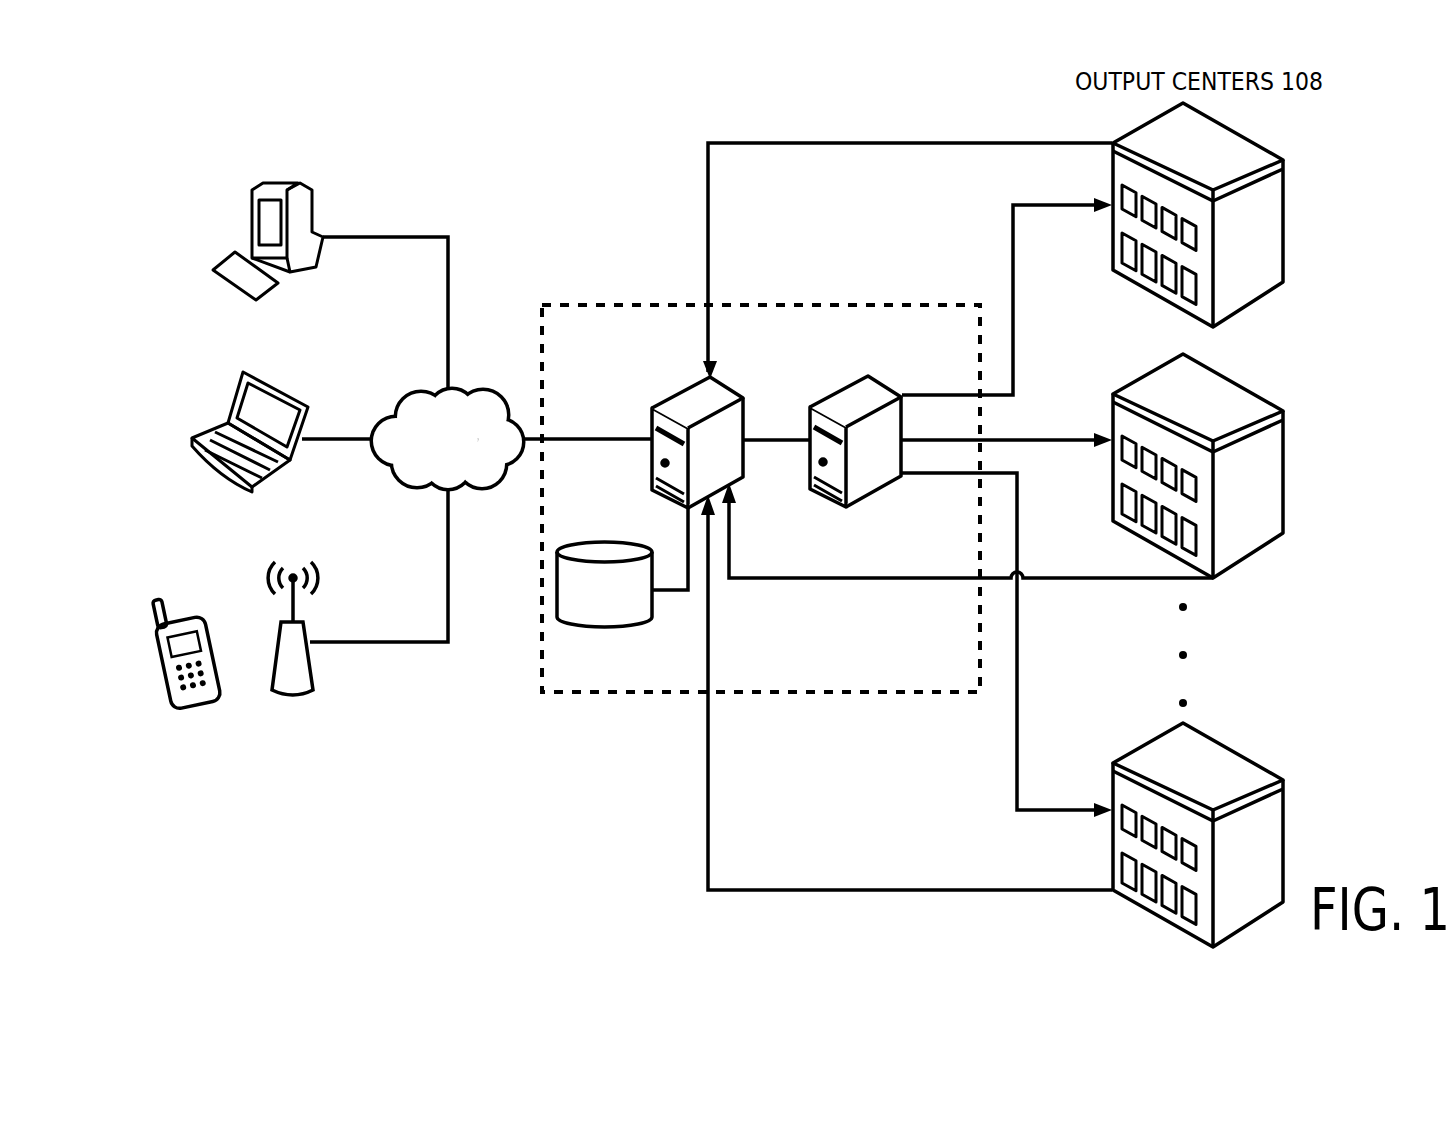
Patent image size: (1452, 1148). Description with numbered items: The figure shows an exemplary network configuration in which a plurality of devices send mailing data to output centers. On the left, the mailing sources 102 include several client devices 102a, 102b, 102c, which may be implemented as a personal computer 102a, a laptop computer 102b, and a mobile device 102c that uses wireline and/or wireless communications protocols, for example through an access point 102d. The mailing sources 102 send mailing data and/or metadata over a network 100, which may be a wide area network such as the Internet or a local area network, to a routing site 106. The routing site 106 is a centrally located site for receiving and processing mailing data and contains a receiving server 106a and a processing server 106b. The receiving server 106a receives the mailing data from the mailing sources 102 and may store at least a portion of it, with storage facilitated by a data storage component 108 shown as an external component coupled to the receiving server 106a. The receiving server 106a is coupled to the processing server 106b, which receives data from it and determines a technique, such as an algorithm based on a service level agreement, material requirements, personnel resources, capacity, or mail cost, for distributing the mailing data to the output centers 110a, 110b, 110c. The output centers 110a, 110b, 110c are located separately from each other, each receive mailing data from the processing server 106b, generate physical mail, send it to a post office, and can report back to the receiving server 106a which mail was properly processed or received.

The network 100 is at (472, 488).
The mailing sources 102 is at (271, 493).
The client device 102a is at (294, 191).
The client device 102b is at (305, 403).
The client device 102c is at (190, 703).
The access point 102d is at (300, 628).
The routing site 106 is at (761, 498).
The receiving server 106a is at (713, 372).
The processing server 106b is at (867, 376).
The data storage component 108 is at (628, 543).
The output center 110a is at (1283, 160).
The output center 110b is at (1283, 411).
The output center 110c is at (1283, 780).